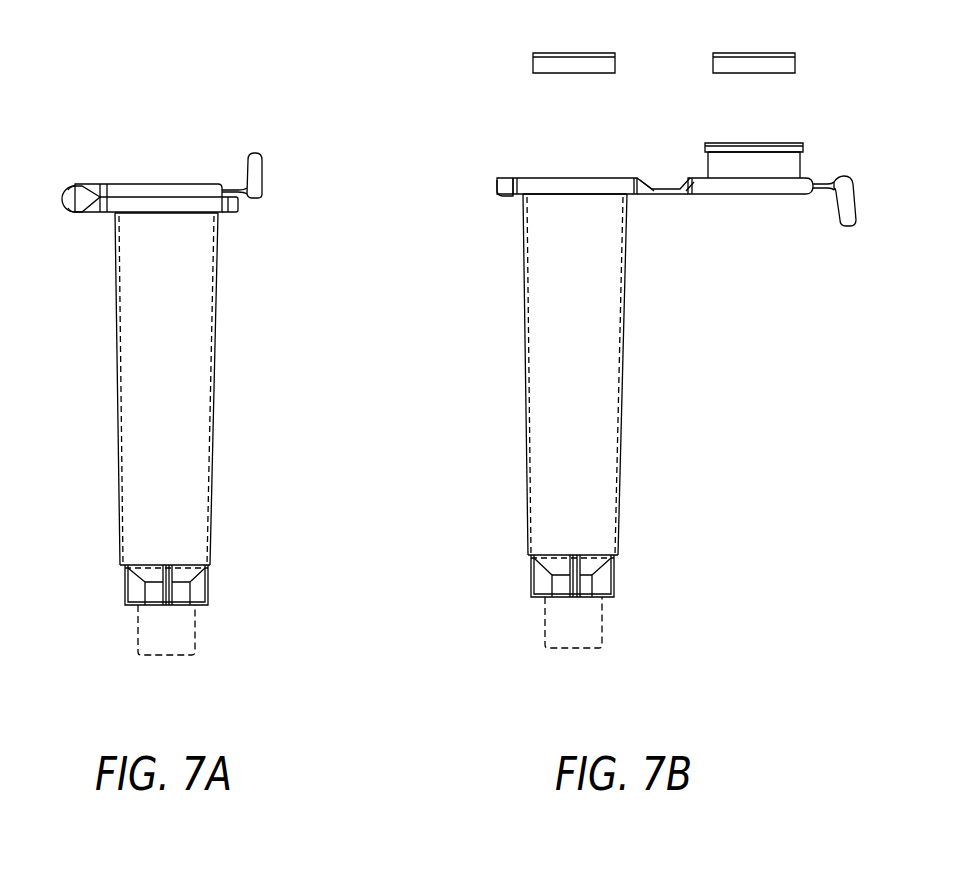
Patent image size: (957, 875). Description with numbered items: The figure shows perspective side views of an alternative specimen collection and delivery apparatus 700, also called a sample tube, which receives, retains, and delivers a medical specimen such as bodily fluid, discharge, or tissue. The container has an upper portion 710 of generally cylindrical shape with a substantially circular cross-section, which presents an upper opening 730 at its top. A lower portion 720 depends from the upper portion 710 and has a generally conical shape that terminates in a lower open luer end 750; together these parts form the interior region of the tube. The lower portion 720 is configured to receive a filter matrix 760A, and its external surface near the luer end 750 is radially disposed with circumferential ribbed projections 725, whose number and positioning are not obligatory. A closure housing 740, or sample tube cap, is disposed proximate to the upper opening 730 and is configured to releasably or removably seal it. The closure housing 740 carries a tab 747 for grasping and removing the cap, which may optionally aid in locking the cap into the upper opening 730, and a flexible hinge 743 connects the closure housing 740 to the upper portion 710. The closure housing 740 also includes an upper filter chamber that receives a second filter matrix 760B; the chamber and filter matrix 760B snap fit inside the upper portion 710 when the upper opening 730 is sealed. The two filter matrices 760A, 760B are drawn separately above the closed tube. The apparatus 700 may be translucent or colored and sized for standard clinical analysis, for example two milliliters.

In FIG. 7A, the specimen collection and delivery apparatus 700 is at (258, 375).
In FIG. 7B, the specimen collection and delivery apparatus 700 is at (665, 366).
In FIG. 7A, the upper portion 710 is at (192, 282).
In FIG. 7B, the upper portion 710 is at (600, 274).
In FIG. 7A, the lower portion 720 is at (188, 502).
In FIG. 7B, the lower portion 720 is at (598, 497).
In FIG. 7A, the circumferential ribbed projections 725 is at (196, 585).
In FIG. 7B, the circumferential ribbed projections 725 is at (605, 578).
In FIG. 7B, the upper opening 730 is at (577, 182).
In FIG. 7A, the closure housing 740 is at (163, 194).
In FIG. 7B, the closure housing 740 is at (755, 195).
In FIG. 7A, the flexible hinge 743 is at (78, 185).
In FIG. 7B, the flexible hinge 743 is at (664, 188).
In FIG. 7A, the tab 747 is at (260, 172).
In FIG. 7B, the tab 747 is at (843, 178).
In FIG. 7A, the lower open luer end 750 is at (180, 642).
In FIG. 7B, the lower open luer end 750 is at (590, 634).
In FIG. 7B, the filter matrix 760A is at (545, 63).
In FIG. 7B, the filter matrix 760B is at (725, 63).